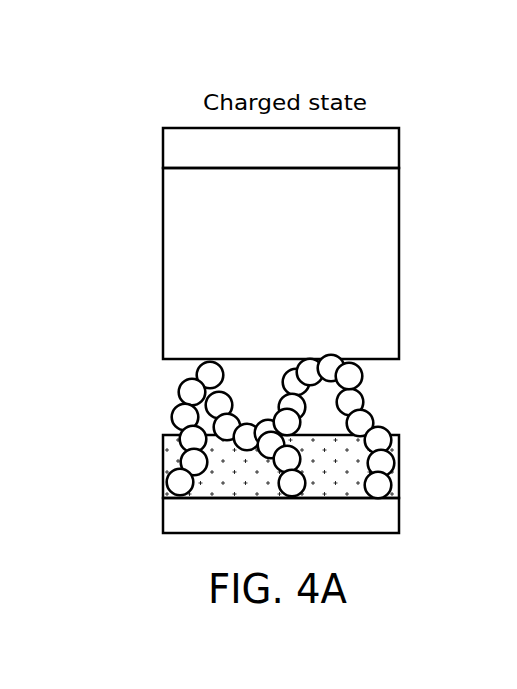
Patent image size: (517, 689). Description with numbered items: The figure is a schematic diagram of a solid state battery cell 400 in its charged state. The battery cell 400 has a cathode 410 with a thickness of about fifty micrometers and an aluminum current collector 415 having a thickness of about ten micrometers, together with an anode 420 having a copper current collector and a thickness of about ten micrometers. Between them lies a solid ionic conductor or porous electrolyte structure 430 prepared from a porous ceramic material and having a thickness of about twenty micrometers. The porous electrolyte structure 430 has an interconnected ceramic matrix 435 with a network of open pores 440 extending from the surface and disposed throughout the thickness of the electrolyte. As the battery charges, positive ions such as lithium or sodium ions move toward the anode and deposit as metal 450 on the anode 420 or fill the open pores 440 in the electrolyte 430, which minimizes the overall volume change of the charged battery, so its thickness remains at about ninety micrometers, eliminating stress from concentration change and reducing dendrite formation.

The battery cell 400 is at (218, 62).
The cathode 410 is at (400, 263).
The aluminum current collector 415 is at (400, 147).
The anode 420 is at (400, 516).
The porous electrolyte structure 430 is at (158, 382).
The interconnected ceramic matrix 435 is at (361, 374).
The open pores 440 is at (322, 427).
The metal 450 is at (400, 466).